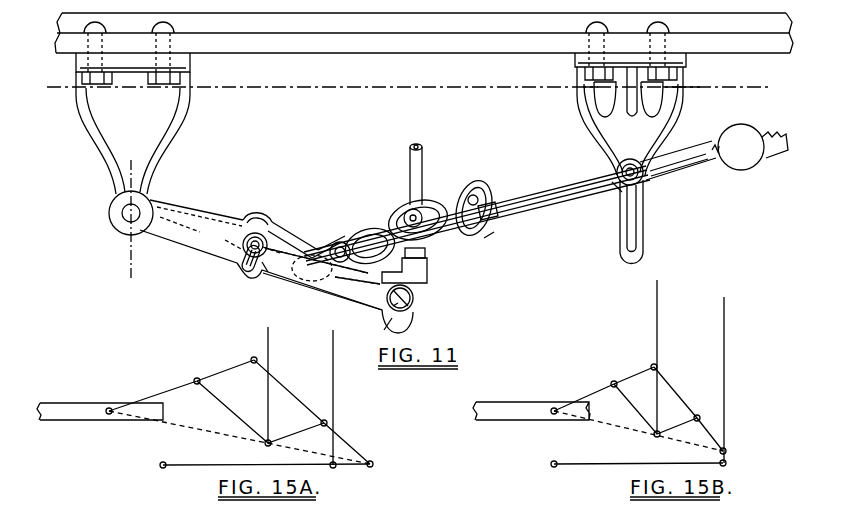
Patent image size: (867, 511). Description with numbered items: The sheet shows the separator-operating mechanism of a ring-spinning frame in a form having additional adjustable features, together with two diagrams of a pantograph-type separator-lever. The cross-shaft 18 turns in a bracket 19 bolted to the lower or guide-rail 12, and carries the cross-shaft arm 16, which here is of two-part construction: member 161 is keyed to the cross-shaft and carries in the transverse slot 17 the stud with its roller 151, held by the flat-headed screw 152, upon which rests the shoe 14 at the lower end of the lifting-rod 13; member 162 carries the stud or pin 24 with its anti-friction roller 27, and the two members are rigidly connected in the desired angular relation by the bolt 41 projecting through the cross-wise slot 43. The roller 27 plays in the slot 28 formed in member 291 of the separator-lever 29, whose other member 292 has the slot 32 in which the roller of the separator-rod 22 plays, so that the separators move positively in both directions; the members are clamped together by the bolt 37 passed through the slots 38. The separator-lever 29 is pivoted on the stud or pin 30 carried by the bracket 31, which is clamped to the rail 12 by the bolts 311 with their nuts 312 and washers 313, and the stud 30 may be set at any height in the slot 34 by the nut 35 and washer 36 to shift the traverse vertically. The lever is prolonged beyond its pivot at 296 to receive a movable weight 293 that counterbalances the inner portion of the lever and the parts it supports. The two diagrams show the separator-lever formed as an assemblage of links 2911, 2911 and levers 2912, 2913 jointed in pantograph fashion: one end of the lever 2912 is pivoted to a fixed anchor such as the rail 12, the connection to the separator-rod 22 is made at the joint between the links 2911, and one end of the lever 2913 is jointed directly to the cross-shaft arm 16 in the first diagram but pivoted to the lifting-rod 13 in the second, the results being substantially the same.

In FIG. 11, the lower or guide-rail 12 is at (403, 55).
In FIG. 15A, the lower or guide-rail 12 is at (100, 412).
In FIG. 15B, the lower or guide-rail 12 is at (531, 411).
In FIG. 11, the lifting-rod 13 is at (256, 233).
In FIG. 15A, the lifting-rod 13 is at (339, 391).
In FIG. 15B, the lifting-rod 13 is at (730, 393).
In FIG. 11, the shoe 14 is at (130, 165).
In FIG. 11, the cross-shaft arm 16 is at (335, 190).
In FIG. 15A, the cross-shaft arm 16 is at (229, 458).
In FIG. 15B, the cross-shaft arm 16 is at (625, 457).
In FIG. 11, the transverse slot 17 is at (392, 318).
In FIG. 11, the cross-shaft 18 is at (113, 214).
In FIG. 15A, the cross-shaft 18 is at (160, 461).
In FIG. 15B, the cross-shaft 18 is at (553, 460).
In FIG. 11, the bracket 19 is at (133, 78).
In FIG. 11, the separator-rod 22 is at (419, 141).
In FIG. 15A, the separator-rod 22 is at (274, 339).
In FIG. 15B, the separator-rod 22 is at (667, 336).
In FIG. 11, the stud or pin 24 is at (343, 226).
In FIG. 11, the anti-friction roller 27 is at (328, 248).
In FIG. 11, the slot 28 is at (388, 238).
In FIG. 11, the separator-lever 29 is at (586, 172).
In FIG. 15A, the separator-lever 29 is at (276, 364).
In FIG. 15B, the separator-lever 29 is at (672, 369).
In FIG. 11, the stud or pin 30 is at (643, 178).
In FIG. 15A, the stud or pin 30 is at (106, 413).
In FIG. 15B, the stud or pin 30 is at (552, 414).
In FIG. 11, the bracket 31 is at (630, 114).
In FIG. 11, the slot 32 is at (401, 209).
In FIG. 11, the slot 34 is at (640, 237).
In FIG. 11, the nut 35 is at (618, 186).
In FIG. 11, the washer 36 is at (648, 160).
In FIG. 11, the bolt 37 is at (494, 218).
In FIG. 11, the slots 38 is at (493, 236).
In FIG. 11, the bolt 41 is at (264, 272).
In FIG. 11, the slot 43 is at (240, 275).
In FIG. 11, the roller 151 is at (419, 302).
In FIG. 11, the flat-headed screw 152 is at (408, 318).
In FIG. 11, the member of cross-shaft arm 161 is at (218, 230).
In FIG. 11, the member of cross-shaft arm 162 is at (251, 209).
In FIG. 11, the member of separator-lever 291 is at (332, 238).
In FIG. 11, the member of separator-lever 292 is at (487, 191).
In FIG. 11, the movable weight 293 is at (738, 147).
In FIG. 11, the prolongation 296 is at (702, 165).
In FIG. 11, the bolts 311 is at (656, 28).
In FIG. 11, the nuts 312 is at (580, 87).
In FIG. 11, the washers 313 is at (588, 74).
In FIG. 15A, the links 2911 is at (217, 397).
In FIG. 15B, the links 2911 is at (651, 395).
In FIG. 15A, the lever 2912 is at (151, 389).
In FIG. 15B, the lever 2912 is at (590, 388).
In FIG. 15A, the lever 2913 is at (283, 383).
In FIG. 15B, the lever 2913 is at (674, 388).